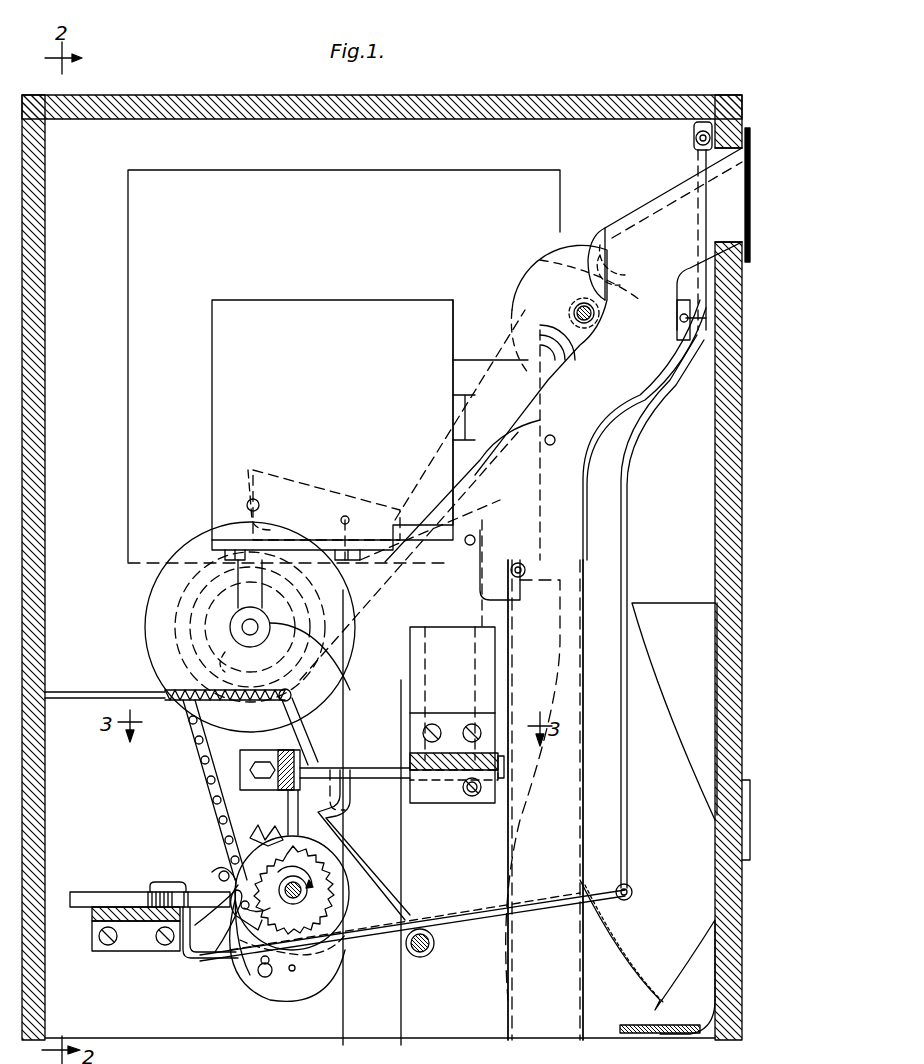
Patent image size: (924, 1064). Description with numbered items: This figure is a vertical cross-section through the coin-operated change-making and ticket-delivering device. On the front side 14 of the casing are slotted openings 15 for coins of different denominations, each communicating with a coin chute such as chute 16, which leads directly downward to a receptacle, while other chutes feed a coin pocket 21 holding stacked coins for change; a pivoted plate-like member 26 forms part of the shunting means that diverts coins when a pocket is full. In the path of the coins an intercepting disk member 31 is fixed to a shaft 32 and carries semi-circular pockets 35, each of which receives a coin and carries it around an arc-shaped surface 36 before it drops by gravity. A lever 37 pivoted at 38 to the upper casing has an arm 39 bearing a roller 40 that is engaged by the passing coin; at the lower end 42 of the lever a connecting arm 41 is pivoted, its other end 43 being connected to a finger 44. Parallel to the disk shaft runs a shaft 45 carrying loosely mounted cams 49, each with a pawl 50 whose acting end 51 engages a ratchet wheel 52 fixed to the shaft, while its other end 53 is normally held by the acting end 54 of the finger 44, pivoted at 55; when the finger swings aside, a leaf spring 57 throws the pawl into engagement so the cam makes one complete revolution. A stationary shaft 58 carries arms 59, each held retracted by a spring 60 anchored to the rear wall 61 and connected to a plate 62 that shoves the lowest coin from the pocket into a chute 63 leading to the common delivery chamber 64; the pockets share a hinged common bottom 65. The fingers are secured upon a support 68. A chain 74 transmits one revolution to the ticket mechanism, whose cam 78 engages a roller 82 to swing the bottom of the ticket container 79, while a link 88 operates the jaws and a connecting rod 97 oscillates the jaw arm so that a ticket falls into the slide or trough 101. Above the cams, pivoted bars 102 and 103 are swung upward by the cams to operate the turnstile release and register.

The front side of casing 14 is at (716, 525).
The slotted openings 15 is at (752, 130).
The coin chute 16 is at (668, 222).
The coin pocket 21 is at (452, 661).
The plate-like member 26 is at (372, 817).
The intercepting disk member 31 is at (560, 275).
The shaft 32 is at (572, 303).
The semi-circular pocket 35 is at (605, 250).
The arc-shaped surface 36 is at (662, 398).
The lever 37 is at (628, 752).
The pivot 38 is at (695, 138).
The arm 39 is at (692, 335).
The roller 40 is at (680, 330).
The connecting arm 41 is at (446, 918).
The lower end of lever 42 is at (634, 888).
The end of connecting arm 43 is at (170, 892).
The finger 44 is at (110, 896).
The shaft 45 is at (285, 889).
The cam 49 is at (274, 990).
The pawl 50 is at (236, 918).
The acting end of pawl 51 is at (272, 908).
The ratchet wheel 52 is at (268, 845).
The end of pawl 53 is at (212, 871).
The acting end of finger 54 is at (184, 950).
The pivot 55 is at (160, 883).
The leaf spring 57 is at (240, 970).
The stationary shaft 58 is at (436, 945).
The arm 59 is at (372, 895).
The spring 60 is at (222, 703).
The rear wall 61 is at (44, 642).
The plate 62 is at (396, 772).
The chute 63 is at (544, 800).
The common delivery chamber 64 is at (647, 956).
The common bottom 65 is at (452, 795).
The support 68 is at (92, 920).
The chain 74 is at (200, 778).
The cam 78 is at (145, 648).
The container 79 is at (344, 366).
The roller 82 is at (250, 470).
The link 88 is at (528, 572).
The connecting rod 97 is at (370, 468).
The slide or trough 101 is at (690, 765).
The bar 102 is at (308, 727).
The bar 103 is at (284, 752).